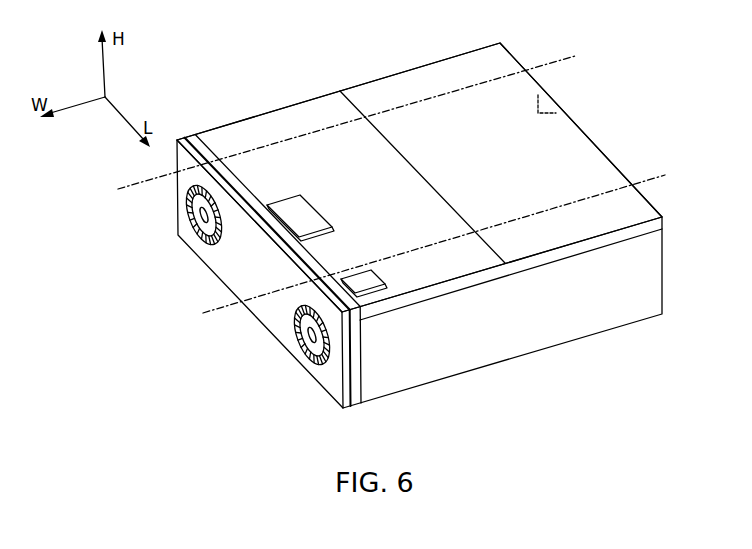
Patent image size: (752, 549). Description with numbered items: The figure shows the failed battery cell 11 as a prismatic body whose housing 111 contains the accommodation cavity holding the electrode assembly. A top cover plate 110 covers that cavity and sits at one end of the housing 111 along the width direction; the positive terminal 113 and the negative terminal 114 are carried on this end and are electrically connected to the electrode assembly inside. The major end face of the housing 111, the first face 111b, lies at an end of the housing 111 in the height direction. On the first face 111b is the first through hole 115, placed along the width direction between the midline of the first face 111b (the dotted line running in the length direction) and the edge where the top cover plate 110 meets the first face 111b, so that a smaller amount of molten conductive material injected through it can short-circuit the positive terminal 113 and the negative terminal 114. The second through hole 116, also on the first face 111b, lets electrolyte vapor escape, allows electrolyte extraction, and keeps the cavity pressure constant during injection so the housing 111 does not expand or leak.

The failed battery cell 11 is at (410, 24).
The top cover plate 110 is at (283, 347).
The housing 111 is at (545, 110).
The first face 111b is at (578, 173).
The positive terminal 113 is at (188, 215).
The negative terminal 114 is at (297, 345).
The first through hole 115 is at (302, 212).
The second through hole 116 is at (363, 275).